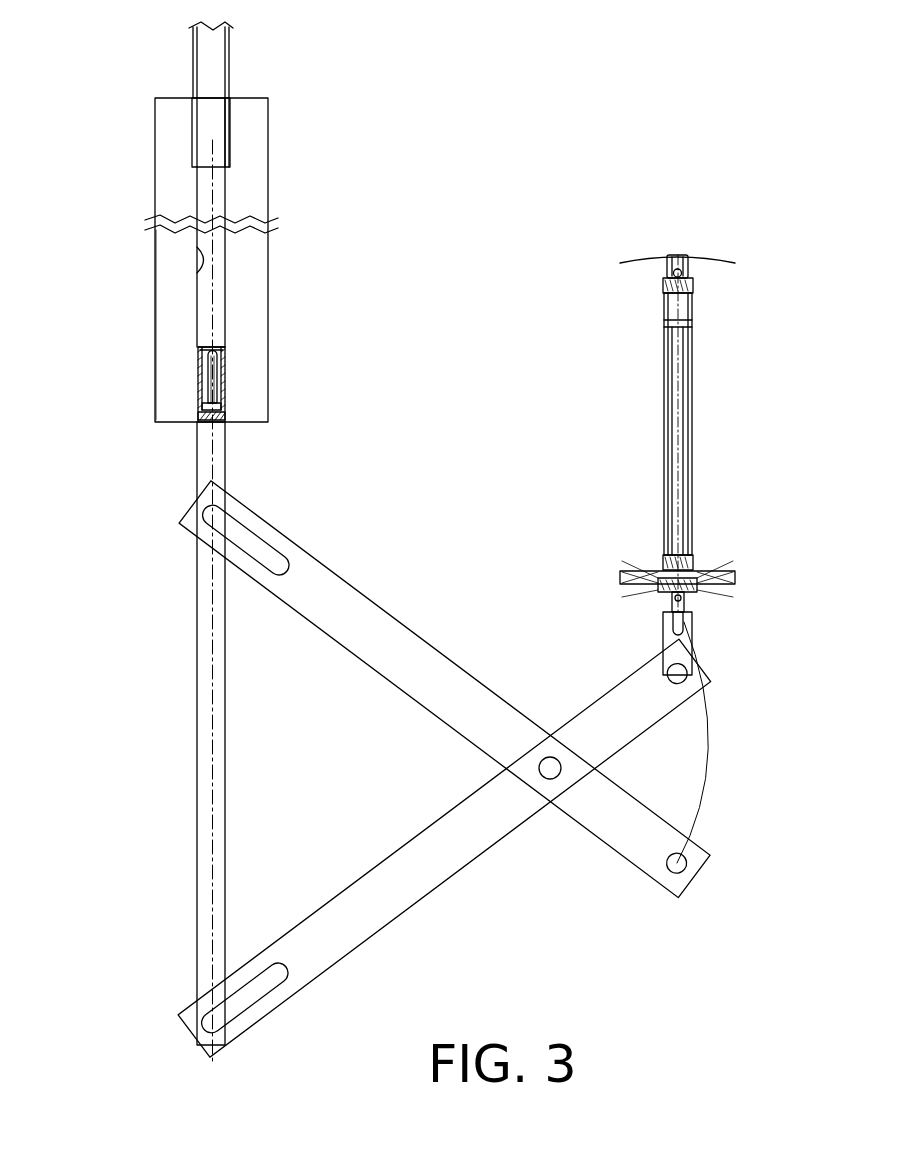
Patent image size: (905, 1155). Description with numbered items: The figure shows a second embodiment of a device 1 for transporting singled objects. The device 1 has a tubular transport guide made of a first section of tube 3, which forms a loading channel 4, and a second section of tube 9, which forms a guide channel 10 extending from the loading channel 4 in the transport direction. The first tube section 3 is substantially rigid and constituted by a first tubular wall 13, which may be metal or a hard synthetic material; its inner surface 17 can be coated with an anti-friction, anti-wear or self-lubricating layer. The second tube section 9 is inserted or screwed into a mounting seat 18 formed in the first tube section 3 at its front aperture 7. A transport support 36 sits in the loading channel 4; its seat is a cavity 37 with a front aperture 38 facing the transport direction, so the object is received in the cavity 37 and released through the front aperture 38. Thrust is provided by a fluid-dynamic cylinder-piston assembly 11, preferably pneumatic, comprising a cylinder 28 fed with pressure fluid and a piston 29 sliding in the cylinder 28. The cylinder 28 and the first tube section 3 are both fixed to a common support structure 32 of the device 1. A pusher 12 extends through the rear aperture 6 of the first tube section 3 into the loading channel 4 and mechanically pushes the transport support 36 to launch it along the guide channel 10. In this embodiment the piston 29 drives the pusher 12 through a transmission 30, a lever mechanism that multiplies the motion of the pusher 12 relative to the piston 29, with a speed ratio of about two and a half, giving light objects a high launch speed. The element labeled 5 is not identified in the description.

The device 1 is at (718, 349).
The first section of tube 3 is at (250, 310).
The loading channel 4 is at (215, 203).
The locking unit 5 is at (207, 337).
The rear aperture 6 is at (205, 422).
The front aperture 7 is at (213, 141).
The second section of tube 9 is at (227, 80).
The guide channel 10 is at (207, 59).
The fluid-dynamic cylinder-piston assembly 11 is at (720, 479).
The pusher 12 is at (205, 470).
The first tubular wall 13 is at (252, 367).
The inner surface 17 is at (197, 275).
The mounting seat 18 is at (228, 136).
The cylinder 28 is at (665, 403).
The piston 29 is at (672, 324).
The transmission 30 is at (468, 848).
The common support structure 32 is at (638, 255).
The transport support 36 is at (225, 395).
The cavity 37 is at (202, 381).
The front aperture 38 is at (215, 345).